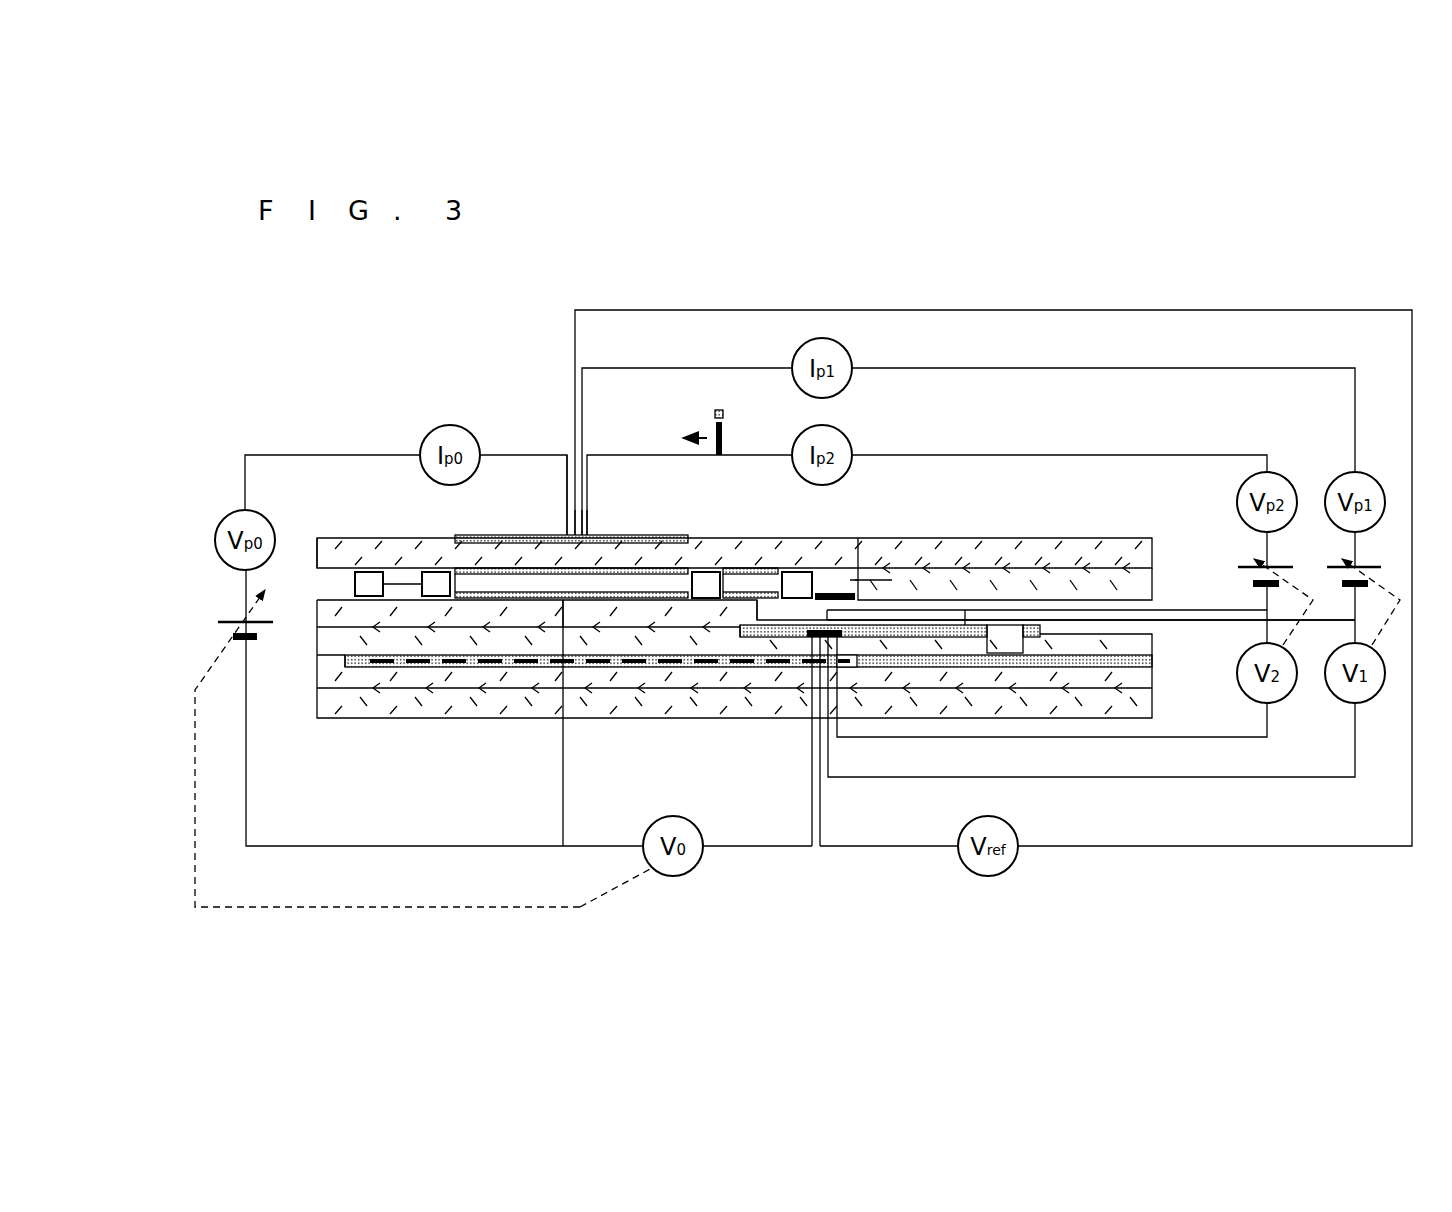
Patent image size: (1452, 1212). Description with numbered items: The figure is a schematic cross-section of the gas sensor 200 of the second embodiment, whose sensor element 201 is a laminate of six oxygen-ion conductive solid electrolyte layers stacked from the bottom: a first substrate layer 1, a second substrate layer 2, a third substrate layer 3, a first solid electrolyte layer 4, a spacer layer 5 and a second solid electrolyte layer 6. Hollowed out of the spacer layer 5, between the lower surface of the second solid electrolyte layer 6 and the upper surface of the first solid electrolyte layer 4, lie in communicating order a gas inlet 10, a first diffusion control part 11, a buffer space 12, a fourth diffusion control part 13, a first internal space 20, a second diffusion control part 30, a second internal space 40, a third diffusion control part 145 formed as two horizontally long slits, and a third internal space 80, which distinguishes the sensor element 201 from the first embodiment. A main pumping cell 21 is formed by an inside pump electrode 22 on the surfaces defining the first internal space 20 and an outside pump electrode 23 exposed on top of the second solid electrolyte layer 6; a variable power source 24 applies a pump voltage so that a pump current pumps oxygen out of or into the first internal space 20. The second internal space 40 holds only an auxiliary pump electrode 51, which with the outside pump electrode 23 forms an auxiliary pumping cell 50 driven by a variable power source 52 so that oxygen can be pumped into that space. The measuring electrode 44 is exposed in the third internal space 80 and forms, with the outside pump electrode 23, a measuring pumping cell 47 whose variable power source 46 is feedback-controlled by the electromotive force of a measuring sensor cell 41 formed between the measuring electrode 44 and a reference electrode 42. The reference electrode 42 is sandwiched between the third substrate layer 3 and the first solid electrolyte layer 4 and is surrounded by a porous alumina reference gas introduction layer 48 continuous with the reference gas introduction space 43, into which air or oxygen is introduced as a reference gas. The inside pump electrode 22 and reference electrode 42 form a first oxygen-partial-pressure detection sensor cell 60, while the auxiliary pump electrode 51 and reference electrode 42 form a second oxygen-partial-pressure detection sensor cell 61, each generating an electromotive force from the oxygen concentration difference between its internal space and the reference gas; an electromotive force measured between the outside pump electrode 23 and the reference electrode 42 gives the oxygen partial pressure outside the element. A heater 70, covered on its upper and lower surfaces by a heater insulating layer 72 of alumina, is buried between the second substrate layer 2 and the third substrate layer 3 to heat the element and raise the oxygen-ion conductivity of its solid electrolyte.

The gas sensor 200 is at (313, 363).
The first substrate layer 1 is at (322, 697).
The second substrate layer 2 is at (322, 667).
The third substrate layer 3 is at (322, 640).
The first solid electrolyte layer 4 is at (322, 606).
The spacer layer 5 is at (1152, 592).
The second solid electrolyte layer 6 is at (1152, 553).
The gas inlet 10 is at (330, 578).
The first diffusion control part 11 is at (370, 578).
The buffer space 12 is at (402, 578).
The fourth diffusion control part 13 is at (438, 578).
The first internal space 20 is at (483, 565).
The main pumping cell 21 is at (689, 551).
The inside pump electrode 22 is at (520, 596).
The outside pump electrode 23 is at (623, 540).
The variable power source 24 is at (232, 630).
The second diffusion control part 30 is at (707, 578).
The second internal space 40 is at (787, 580).
The measuring sensor cell 41 is at (810, 609).
The reference electrode 42 is at (815, 640).
The reference gas introduction space 43 is at (1148, 630).
The measuring electrode 44 is at (840, 597).
The variable power source 46 is at (1282, 567).
The measuring pumping cell 47 is at (874, 553).
The reference gas introduction layer 48 is at (933, 625).
The auxiliary pumping cell 50 is at (735, 551).
The auxiliary pump electrode 51 is at (752, 566).
The variable power source 52 is at (1370, 567).
The first oxygen-partial-pressure detection sensor cell 60 is at (691, 616).
The second oxygen-partial-pressure detection sensor cell 61 is at (728, 614).
The heater 70 is at (387, 667).
The heater insulating layer 72 is at (350, 667).
The third internal space 80 is at (892, 580).
The third diffusion control part 145 is at (832, 593).
The sensor element 201 is at (925, 540).